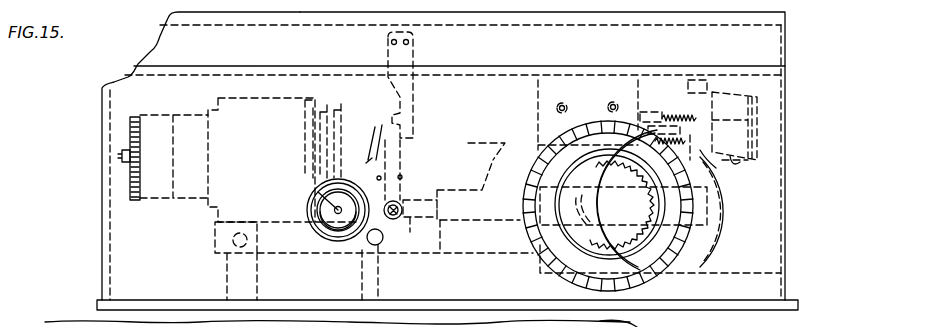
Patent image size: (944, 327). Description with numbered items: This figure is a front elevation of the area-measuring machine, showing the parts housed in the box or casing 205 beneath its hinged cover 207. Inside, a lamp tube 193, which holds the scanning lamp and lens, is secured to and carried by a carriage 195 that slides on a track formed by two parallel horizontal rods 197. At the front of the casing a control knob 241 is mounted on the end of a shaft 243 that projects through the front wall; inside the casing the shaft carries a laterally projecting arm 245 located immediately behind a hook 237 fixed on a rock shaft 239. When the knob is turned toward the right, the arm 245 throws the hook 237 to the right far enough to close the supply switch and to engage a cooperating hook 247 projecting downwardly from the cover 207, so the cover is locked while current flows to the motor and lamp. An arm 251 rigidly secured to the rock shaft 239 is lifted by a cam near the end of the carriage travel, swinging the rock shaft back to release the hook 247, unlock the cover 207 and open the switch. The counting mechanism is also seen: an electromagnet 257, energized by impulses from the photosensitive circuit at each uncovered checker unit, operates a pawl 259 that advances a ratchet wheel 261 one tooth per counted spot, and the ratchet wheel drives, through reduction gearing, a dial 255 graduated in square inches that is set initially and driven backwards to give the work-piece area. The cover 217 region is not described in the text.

The lamp tube 193 is at (196, 113).
The carriage 195 is at (231, 208).
The horizontal rods 197 is at (236, 244).
The casing 205 is at (102, 172).
The hinged cover 207 is at (625, 12).
The cover 217 is at (470, 12).
The hook 237 is at (388, 120).
The rock shaft 239 is at (398, 203).
The control knob 241 is at (318, 205).
The shaft 243 is at (322, 192).
The arm 245 is at (367, 160).
The cooperating hook 247 is at (413, 103).
The arm 251 is at (411, 219).
The dial 255 is at (663, 237).
The electromagnet 257 is at (733, 162).
The pawl 259 is at (716, 190).
The ratchet wheel 261 is at (724, 210).